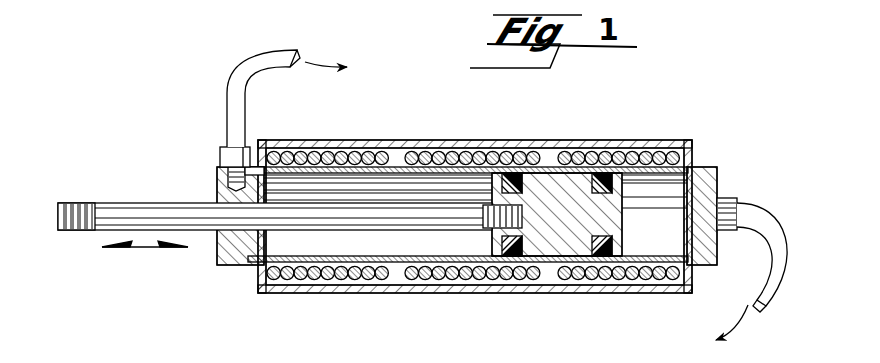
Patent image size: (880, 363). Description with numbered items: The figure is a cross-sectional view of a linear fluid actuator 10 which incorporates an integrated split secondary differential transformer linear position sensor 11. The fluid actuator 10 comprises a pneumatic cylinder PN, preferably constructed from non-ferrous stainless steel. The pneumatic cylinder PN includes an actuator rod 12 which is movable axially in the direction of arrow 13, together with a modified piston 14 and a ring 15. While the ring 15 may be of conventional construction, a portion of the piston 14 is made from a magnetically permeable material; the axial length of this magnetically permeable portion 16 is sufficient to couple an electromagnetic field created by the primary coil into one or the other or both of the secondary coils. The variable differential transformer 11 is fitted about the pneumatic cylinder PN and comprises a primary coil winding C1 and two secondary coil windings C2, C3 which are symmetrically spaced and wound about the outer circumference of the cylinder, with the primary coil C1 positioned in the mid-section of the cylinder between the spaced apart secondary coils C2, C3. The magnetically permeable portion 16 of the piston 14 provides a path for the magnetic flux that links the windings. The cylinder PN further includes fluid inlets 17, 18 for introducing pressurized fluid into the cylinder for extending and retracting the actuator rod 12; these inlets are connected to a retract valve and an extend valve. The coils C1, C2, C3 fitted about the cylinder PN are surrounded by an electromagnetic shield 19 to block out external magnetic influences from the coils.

The linear fluid actuator 10 is at (702, 118).
The differential transformer linear position sensor 11 is at (298, 300).
The actuator rod 12 is at (173, 203).
The arrow 13 is at (148, 249).
The piston 14 is at (550, 185).
The ring 15 is at (613, 172).
The magnetically permeable portion 16 is at (492, 233).
The fluid inlet 17 is at (220, 157).
The fluid inlet 18 is at (723, 197).
The electromagnetic shield 19 is at (530, 291).
The primary coil winding C1 is at (442, 283).
The secondary coil winding C2 is at (340, 283).
The secondary coil winding C3 is at (591, 285).
The pneumatic cylinder PN is at (248, 263).